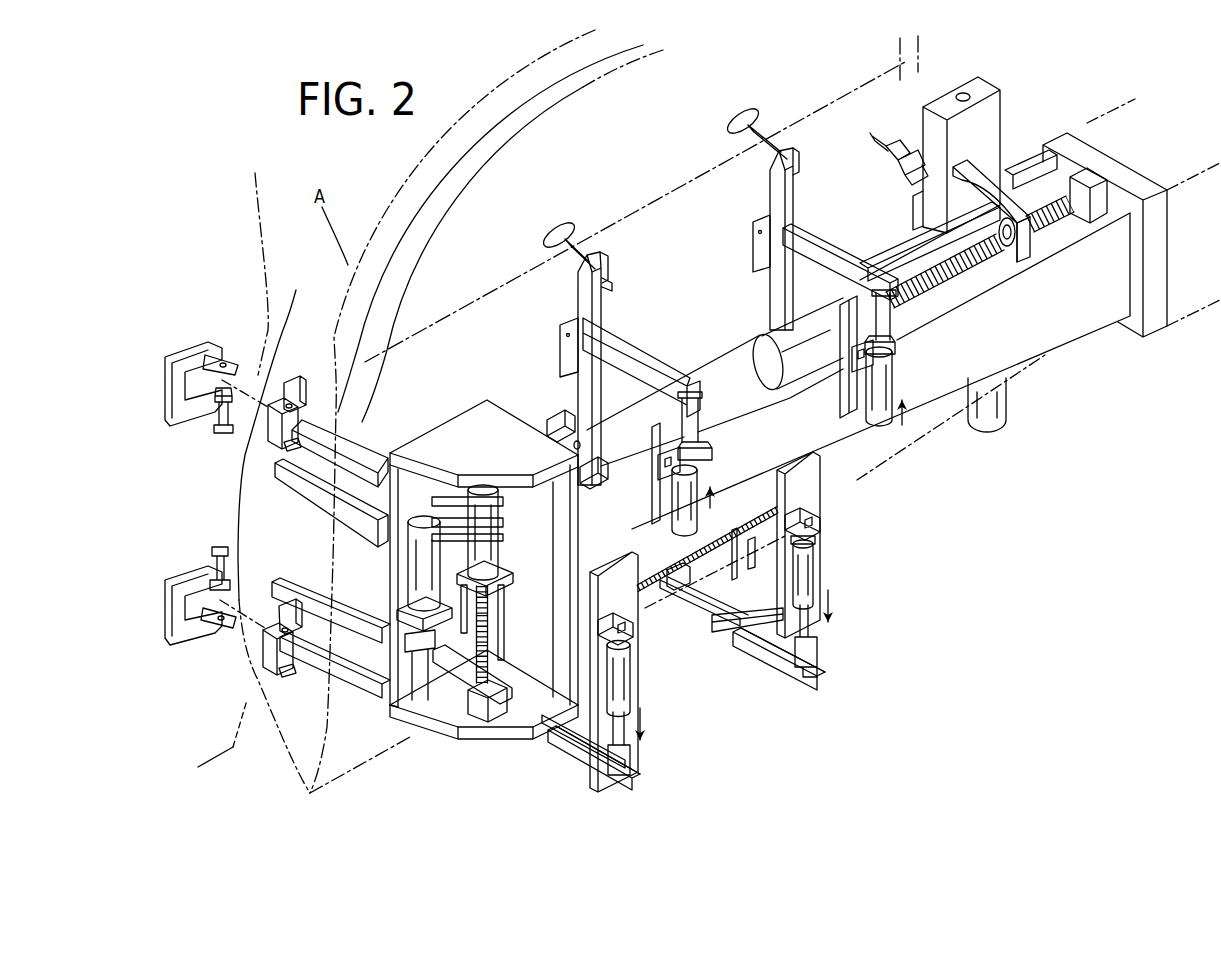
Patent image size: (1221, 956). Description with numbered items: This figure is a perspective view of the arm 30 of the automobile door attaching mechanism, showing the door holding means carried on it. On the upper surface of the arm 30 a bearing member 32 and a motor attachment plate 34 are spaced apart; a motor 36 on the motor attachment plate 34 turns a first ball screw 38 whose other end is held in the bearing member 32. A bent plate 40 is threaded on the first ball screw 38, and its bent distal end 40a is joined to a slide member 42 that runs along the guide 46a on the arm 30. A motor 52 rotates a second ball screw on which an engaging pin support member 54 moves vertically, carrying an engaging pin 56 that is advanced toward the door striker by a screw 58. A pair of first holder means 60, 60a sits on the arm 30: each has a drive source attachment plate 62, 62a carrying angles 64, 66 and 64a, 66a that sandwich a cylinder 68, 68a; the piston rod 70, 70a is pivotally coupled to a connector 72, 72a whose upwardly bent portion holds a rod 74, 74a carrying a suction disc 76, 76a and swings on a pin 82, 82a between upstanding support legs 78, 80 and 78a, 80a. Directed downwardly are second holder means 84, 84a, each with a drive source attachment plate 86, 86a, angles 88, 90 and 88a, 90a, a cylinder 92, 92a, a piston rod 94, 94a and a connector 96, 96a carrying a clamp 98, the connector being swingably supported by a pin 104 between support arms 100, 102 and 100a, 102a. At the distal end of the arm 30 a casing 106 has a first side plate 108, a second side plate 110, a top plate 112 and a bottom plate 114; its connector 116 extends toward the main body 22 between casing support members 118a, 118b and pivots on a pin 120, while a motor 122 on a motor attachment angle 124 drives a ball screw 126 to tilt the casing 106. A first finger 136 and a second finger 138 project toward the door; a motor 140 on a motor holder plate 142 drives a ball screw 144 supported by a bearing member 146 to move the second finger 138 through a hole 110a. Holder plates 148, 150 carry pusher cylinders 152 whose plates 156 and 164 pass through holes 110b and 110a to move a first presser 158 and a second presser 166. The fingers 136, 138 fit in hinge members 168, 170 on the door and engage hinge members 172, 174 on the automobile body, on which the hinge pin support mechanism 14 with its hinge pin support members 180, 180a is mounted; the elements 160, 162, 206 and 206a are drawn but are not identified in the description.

The hinge pin support mechanism 14 is at (262, 279).
The main body 22 is at (1163, 145).
The arm 30 is at (1078, 335).
The bearing member 32 is at (1098, 225).
The motor attachment plate 34 is at (836, 370).
The motor 36 is at (770, 350).
The first ball screw 38 is at (962, 265).
The plate 40 is at (1028, 245).
The bent distal end 40a is at (980, 180).
The slide member 42 is at (1000, 115).
The guide 46a is at (923, 243).
The motor 52 is at (990, 418).
The engaging pin support member 54 is at (912, 205).
The engaging pin 56 is at (882, 145).
The screw 58 is at (902, 150).
The first holder means 60 is at (830, 212).
The first holder means 60a is at (646, 332).
The drive source attachment plate 62 is at (870, 400).
The drive source attachment plate 62a is at (660, 520).
The angle 64 is at (897, 346).
The angle 64a is at (712, 455).
The angle 66 is at (875, 360).
The angle 66a is at (682, 465).
The cylinder 68 is at (893, 382).
The cylinder 68a is at (696, 510).
The piston rod 70 is at (893, 322).
The piston rod 70a is at (699, 430).
The connector 72 is at (872, 242).
The connector 72a is at (655, 370).
The rod 74 is at (772, 140).
The rod 74a is at (588, 250).
The suction disc 76 is at (753, 112).
The suction disc 76a is at (570, 225).
The support leg 78 is at (783, 280).
The support leg 78a is at (584, 372).
The support leg 80 is at (789, 288).
The support leg 80a is at (590, 388).
The pin 82 is at (761, 232).
The pin 82a is at (568, 340).
The second holder means 84 is at (862, 642).
The second holder means 84a is at (676, 737).
The drive source attachment plate 86 is at (800, 480).
The drive source attachment plate 86a is at (612, 600).
The angle 88 is at (822, 521).
The angle 88a is at (635, 628).
The angle 90 is at (790, 520).
The angle 90a is at (630, 670).
The cylinder 92 is at (812, 568).
The cylinder 92a is at (630, 695).
The piston rod 94 is at (810, 627).
The piston rod 94a is at (632, 748).
The connector 96 is at (780, 668).
The connector 96a is at (567, 755).
The clamp 98 is at (665, 588).
The support arm 100 is at (748, 630).
The support arm 100a is at (600, 762).
The support arm 102 is at (760, 634).
The support arm 102a is at (552, 738).
The pin 104 is at (718, 632).
The casing 106 is at (470, 400).
The first side plate 108 is at (573, 523).
The second side plate 110 is at (402, 563).
The hole 110a is at (455, 726).
The hole 110b is at (465, 466).
The top plate 112 is at (452, 442).
The bottom plate 114 is at (458, 742).
The connector 116 is at (556, 420).
The casing support member 118a is at (600, 465).
The casing support member 118b is at (548, 430).
The pin 120 is at (581, 446).
The motor 122 is at (754, 545).
The motor attachment angle 124 is at (736, 558).
The ball screw 126 is at (695, 590).
The first finger 136 is at (360, 458).
The second finger 138 is at (360, 690).
The motor 140 is at (495, 553).
The motor holder plate 142 is at (505, 570).
The ball screw 144 is at (490, 633).
The bearing member 146 is at (490, 717).
The holder plate 148 is at (505, 524).
The holder plate 150 is at (490, 645).
The pusher cylinder 152 is at (504, 598).
The plate 156 is at (505, 501).
The first presser 158 is at (313, 493).
The cylinder 160 is at (406, 580).
The screw 162 is at (490, 677).
The plate 164 is at (392, 710).
The second presser 166 is at (317, 607).
The hinge member 168 is at (292, 383).
The hinge member 170 is at (288, 678).
The hinge member 172 is at (218, 352).
The hinge member 174 is at (220, 630).
The hinge pin support member 180 is at (206, 432).
The hinge pin support member 180a is at (207, 568).
The bolt 206 is at (222, 434).
The bolt 206a is at (219, 546).